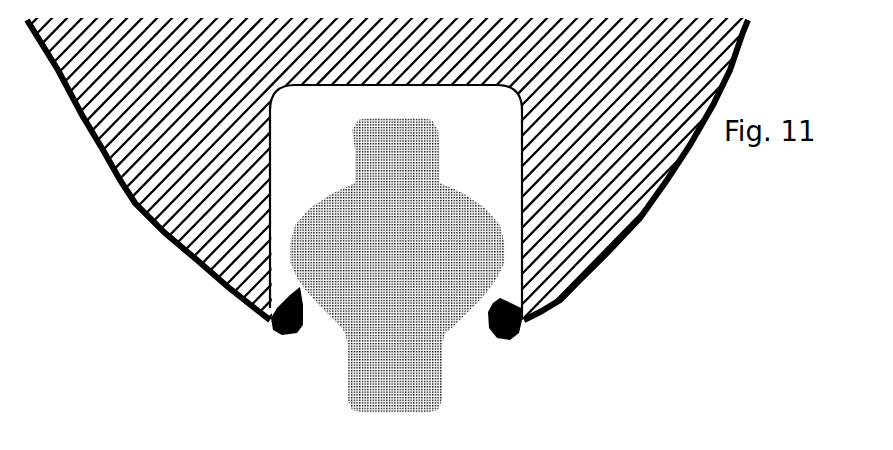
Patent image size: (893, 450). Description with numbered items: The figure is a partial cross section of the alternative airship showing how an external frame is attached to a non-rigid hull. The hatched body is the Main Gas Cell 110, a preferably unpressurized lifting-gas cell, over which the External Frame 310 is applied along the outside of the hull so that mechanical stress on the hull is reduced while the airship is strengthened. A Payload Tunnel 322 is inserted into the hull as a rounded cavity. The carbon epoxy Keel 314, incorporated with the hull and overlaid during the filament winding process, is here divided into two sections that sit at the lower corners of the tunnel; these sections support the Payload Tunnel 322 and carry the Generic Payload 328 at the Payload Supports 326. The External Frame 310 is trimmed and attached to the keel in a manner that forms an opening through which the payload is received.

The Main Gas Cell 110 is at (205, 193).
The External Frame 310 is at (80, 115).
The Payload Tunnel 322 is at (270, 119).
The Generic Payload 328 is at (381, 265).
The Keel 314 is at (280, 333).
The Payload Support 326 is at (497, 301).